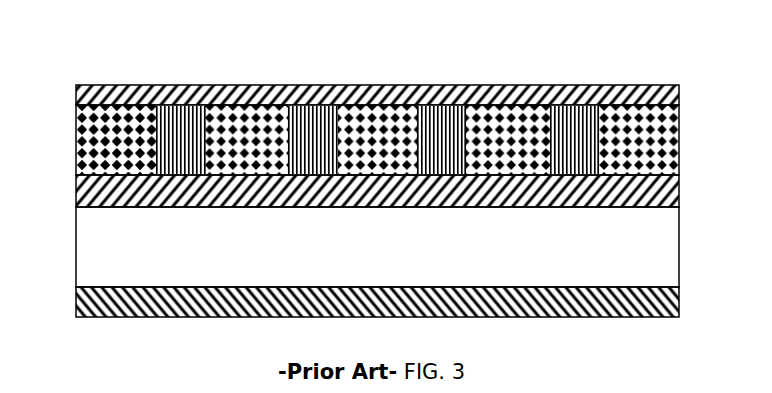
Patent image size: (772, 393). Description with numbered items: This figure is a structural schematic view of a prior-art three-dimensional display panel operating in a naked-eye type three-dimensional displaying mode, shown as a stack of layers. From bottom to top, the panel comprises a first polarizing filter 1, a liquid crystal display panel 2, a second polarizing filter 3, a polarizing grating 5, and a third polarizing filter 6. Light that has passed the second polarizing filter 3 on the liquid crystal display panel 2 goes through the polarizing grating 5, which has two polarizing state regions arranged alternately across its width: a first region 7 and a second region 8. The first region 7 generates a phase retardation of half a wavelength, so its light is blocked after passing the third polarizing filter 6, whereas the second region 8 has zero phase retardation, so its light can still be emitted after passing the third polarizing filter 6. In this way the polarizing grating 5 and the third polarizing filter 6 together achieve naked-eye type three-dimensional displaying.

The first polarizing filter 1 is at (679, 307).
The liquid crystal display panel 2 is at (673, 256).
The second polarizing filter 3 is at (679, 197).
The polarizing grating 5 is at (679, 145).
The third polarizing filter 6 is at (679, 94).
The first region 7 is at (80, 143).
The second region 8 is at (176, 136).